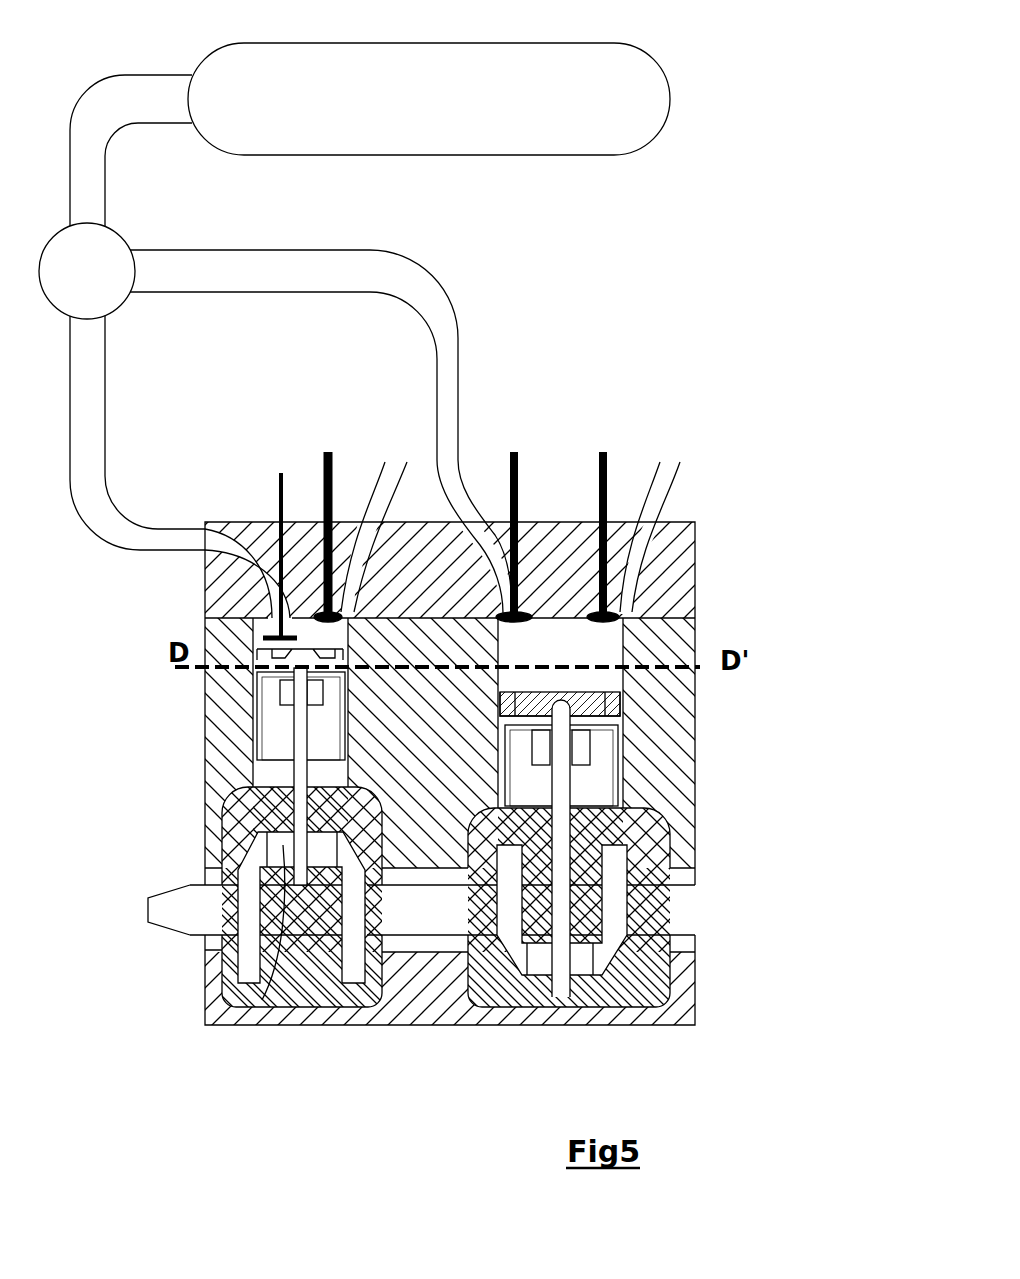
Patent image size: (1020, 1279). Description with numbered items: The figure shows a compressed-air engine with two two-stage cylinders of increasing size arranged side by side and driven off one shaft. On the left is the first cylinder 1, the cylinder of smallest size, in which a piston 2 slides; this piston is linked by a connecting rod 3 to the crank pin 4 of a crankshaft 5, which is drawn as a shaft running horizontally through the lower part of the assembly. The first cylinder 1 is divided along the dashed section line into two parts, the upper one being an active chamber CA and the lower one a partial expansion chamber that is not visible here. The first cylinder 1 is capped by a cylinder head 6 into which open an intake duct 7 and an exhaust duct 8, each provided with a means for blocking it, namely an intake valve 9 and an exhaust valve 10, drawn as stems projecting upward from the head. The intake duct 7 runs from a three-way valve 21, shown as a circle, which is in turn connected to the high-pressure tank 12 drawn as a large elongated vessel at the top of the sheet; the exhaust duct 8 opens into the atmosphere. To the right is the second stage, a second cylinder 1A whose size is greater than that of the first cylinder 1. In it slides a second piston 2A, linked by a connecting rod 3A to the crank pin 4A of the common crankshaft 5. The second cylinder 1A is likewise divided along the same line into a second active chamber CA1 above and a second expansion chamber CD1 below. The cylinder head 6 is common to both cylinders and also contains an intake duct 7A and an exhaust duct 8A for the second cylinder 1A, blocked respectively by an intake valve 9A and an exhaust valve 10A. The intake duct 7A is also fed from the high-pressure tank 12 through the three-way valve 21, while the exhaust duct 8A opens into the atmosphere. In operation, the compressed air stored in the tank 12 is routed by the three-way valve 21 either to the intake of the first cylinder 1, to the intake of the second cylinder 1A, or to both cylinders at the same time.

The first cylinder 1 is at (253, 773).
The piston 2 is at (278, 735).
The connecting rod 3 is at (303, 865).
The crank pin 4 is at (207, 1016).
The crankshaft 5 is at (213, 910).
The cylinder head 6 is at (575, 560).
The intake duct 7 is at (92, 130).
The intake duct 7A is at (437, 303).
The exhaust duct 8 is at (383, 507).
The exhaust duct 8A is at (665, 485).
The intake valve 9 is at (278, 502).
The intake valve 9A is at (518, 470).
The exhaust valve 10 is at (327, 480).
The exhaust valve 10A is at (610, 520).
The high-pressure tank 12 is at (405, 108).
The three-way valve 21 is at (77, 263).
The active chamber CA is at (318, 635).
The second active chamber CA1 is at (560, 713).
The second expansion chamber CD1 is at (561, 739).
The second cylinder 1A is at (498, 678).
The second piston 2A is at (528, 780).
The connecting rod 3A is at (565, 980).
The crank pin 4A is at (583, 965).